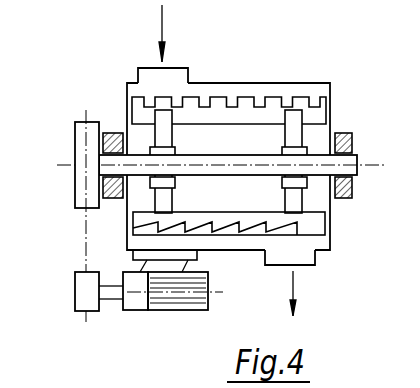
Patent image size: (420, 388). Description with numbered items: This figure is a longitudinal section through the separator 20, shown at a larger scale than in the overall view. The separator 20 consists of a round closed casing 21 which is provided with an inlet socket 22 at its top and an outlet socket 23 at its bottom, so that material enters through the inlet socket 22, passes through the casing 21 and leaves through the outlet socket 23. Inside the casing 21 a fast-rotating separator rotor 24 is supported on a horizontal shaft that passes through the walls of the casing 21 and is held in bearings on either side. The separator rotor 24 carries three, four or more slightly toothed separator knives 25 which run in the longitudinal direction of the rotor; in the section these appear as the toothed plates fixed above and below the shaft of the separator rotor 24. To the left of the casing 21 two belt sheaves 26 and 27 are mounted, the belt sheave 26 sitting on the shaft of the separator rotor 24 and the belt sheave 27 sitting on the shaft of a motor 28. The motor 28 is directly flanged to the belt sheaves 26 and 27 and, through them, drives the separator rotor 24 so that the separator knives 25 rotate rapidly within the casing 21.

The separator 20 is at (248, 145).
The casing 21 is at (217, 83).
The inlet socket 22 is at (150, 83).
The outlet socket 23 is at (295, 263).
The separator rotor 24 is at (348, 170).
The separator knives 25 is at (313, 223).
The belt sheave 26 is at (62, 217).
The belt sheave 27 is at (83, 291).
The motor 28 is at (160, 303).